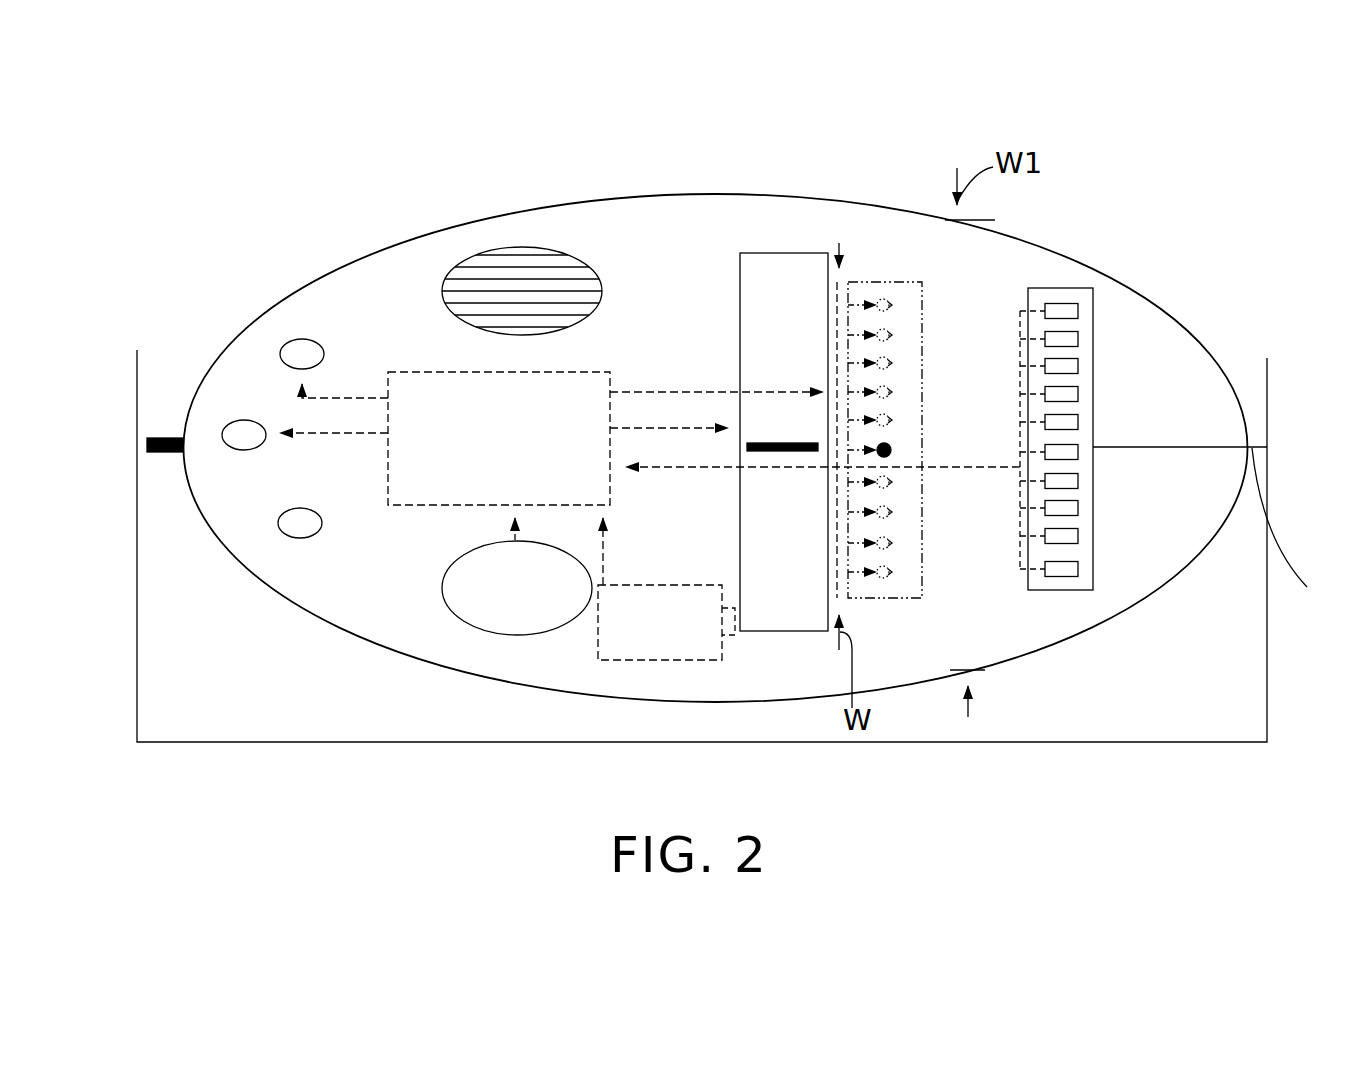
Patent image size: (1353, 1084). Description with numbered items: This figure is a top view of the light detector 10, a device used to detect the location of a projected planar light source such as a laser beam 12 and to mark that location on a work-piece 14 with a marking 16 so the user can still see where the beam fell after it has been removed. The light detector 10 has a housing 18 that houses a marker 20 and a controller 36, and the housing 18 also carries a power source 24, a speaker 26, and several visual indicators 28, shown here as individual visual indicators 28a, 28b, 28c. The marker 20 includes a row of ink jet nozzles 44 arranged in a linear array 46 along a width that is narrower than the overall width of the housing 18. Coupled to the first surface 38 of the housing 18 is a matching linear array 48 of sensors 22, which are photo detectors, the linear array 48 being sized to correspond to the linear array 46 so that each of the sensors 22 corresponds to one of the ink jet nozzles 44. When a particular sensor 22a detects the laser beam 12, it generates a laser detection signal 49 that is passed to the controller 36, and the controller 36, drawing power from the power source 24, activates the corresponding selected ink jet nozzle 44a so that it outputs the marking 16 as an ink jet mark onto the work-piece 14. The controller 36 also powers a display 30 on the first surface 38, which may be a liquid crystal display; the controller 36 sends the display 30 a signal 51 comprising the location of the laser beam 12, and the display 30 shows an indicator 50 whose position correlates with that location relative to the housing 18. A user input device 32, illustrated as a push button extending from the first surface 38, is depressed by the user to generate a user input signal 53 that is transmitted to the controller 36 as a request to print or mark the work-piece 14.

The light detector 10 is at (1159, 266).
The laser beam 12 is at (1300, 532).
The work-piece 14 is at (1067, 743).
The marking 16 is at (158, 452).
The housing 18 is at (1062, 253).
The marker 20 is at (878, 268).
The sensors 22 is at (1078, 306).
The sensor 22a is at (1067, 453).
The power source 24 is at (595, 640).
The speaker 26 is at (520, 245).
The visual indicators 28 is at (298, 553).
The visual indicator 28a is at (302, 340).
The visual indicator 28b is at (236, 427).
The visual indicator 28c is at (290, 537).
The display 30 is at (782, 240).
The user input device 32 is at (495, 608).
The controller 36 is at (585, 370).
The first surface 38 is at (1227, 512).
The ink jet nozzles 44 is at (895, 362).
The ink jet nozzle 44a is at (892, 447).
The linear array 46 is at (875, 603).
The linear array 48 is at (1053, 590).
The laser detection signal 49 is at (638, 468).
The indicator 50 is at (753, 443).
The signal 51 is at (632, 427).
The user input signal 53 is at (510, 530).